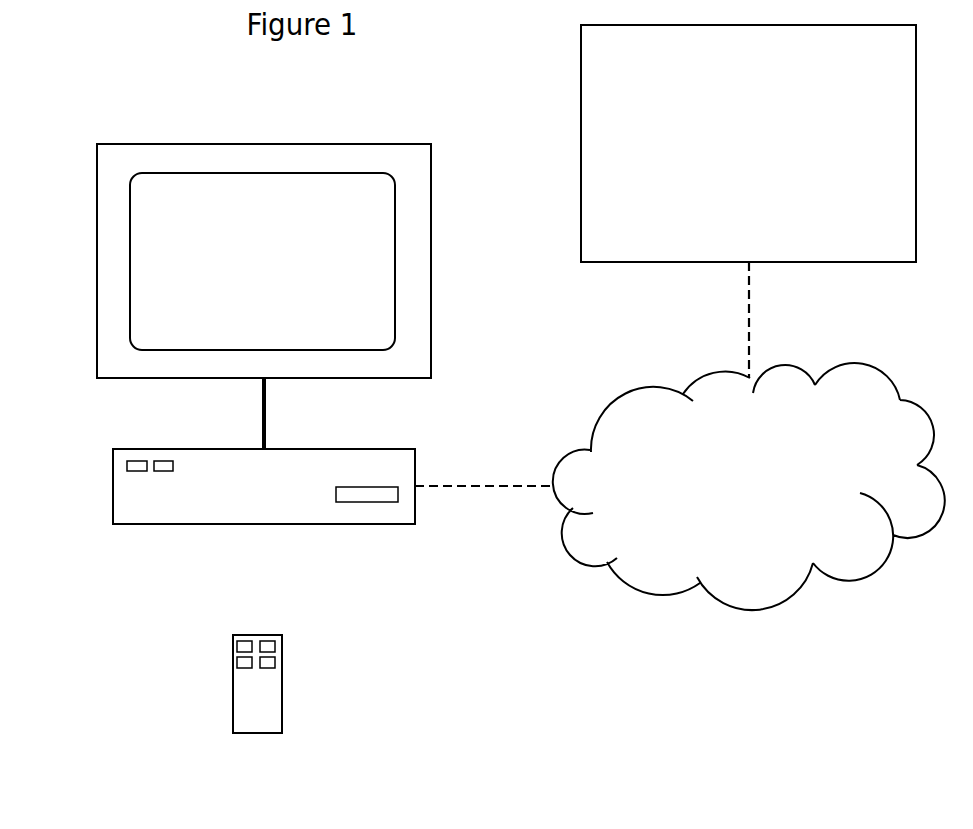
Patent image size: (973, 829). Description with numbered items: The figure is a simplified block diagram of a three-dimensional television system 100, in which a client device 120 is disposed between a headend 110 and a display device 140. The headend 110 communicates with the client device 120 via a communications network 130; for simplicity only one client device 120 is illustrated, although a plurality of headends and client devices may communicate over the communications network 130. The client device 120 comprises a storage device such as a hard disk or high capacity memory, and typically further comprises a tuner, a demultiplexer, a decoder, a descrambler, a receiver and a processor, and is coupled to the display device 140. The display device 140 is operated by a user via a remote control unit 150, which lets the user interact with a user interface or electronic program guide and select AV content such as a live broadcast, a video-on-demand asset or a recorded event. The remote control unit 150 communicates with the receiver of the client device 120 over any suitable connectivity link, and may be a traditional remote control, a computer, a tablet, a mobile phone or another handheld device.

The 3D-TV system 100 is at (572, 718).
The headend 110 is at (729, 157).
The client device 120 is at (283, 506).
The communications network 130 is at (767, 498).
The display device 140 is at (243, 274).
The remote control unit 150 is at (243, 634).